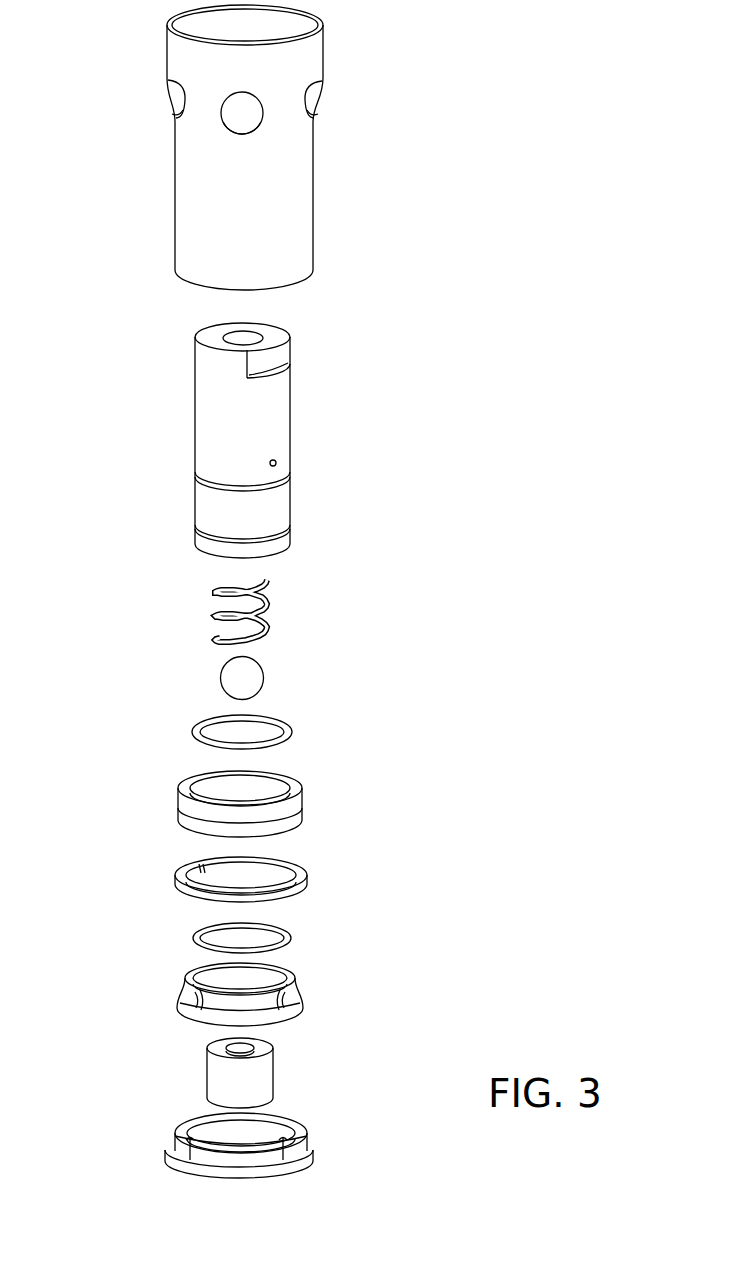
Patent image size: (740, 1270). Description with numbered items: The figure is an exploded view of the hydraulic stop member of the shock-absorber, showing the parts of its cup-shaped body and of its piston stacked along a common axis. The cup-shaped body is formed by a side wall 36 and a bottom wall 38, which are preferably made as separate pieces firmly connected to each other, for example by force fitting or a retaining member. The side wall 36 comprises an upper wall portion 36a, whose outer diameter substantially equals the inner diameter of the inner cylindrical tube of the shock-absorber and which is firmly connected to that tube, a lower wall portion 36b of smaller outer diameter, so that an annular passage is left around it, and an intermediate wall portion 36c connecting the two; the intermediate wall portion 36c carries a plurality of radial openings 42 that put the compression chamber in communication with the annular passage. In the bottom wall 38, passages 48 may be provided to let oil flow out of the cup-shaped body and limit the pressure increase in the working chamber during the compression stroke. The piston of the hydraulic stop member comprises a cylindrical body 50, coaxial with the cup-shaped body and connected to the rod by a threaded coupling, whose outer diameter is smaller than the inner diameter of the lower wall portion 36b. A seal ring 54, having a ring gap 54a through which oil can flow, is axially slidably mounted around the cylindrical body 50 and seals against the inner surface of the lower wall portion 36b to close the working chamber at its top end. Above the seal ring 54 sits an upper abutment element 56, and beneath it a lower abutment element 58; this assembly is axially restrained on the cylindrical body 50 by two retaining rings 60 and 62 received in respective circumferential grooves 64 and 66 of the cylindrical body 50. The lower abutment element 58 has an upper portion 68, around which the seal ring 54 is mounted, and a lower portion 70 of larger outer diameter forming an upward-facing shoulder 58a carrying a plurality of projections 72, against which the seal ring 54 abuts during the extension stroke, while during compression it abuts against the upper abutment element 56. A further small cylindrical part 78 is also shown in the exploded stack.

The side wall 36 is at (252, 147).
The upper wall portion 36a is at (306, 60).
The lower wall portion 36b is at (298, 230).
The intermediate wall portion 36c is at (284, 116).
The radial openings 42 is at (176, 105).
The cylindrical body 50 is at (240, 440).
The circumferential groove 64 is at (280, 478).
The circumferential groove 66 is at (277, 536).
The retaining ring 60 is at (195, 722).
The upper abutment element 56 is at (304, 815).
The seal ring 54 is at (238, 857).
The ring gap 54a is at (200, 866).
The retaining ring 62 is at (194, 940).
The upper portion 68 is at (300, 987).
The projections 72 is at (197, 997).
The lower abutment element 58 is at (246, 995).
The shoulder 58a is at (225, 1010).
The lower portion 70 is at (290, 1022).
The bushing 78 is at (215, 1075).
The passages 48 is at (300, 1120).
The bottom wall 38 is at (237, 1136).